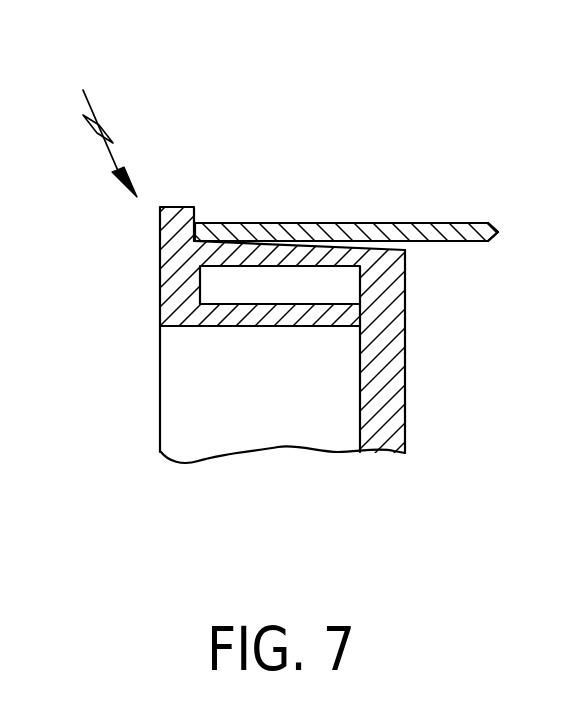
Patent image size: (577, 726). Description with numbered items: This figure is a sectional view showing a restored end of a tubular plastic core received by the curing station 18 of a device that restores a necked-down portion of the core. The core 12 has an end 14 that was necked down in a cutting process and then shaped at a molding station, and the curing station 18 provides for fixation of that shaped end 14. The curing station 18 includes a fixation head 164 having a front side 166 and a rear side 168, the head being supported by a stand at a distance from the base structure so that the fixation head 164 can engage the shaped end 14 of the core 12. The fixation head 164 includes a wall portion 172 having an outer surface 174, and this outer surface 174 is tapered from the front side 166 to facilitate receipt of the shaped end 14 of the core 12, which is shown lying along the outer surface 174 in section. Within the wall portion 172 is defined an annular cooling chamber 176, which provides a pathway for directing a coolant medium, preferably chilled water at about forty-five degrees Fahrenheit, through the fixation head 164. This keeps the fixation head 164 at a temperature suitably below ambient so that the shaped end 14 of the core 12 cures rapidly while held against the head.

The tubular plastic core 12 is at (498, 228).
The end of the core 14 is at (230, 222).
The curing station 18 is at (101, 127).
The fixation head 164 is at (177, 207).
The front side 166 is at (406, 290).
The rear side 168 is at (160, 283).
The wall portion 172 is at (291, 326).
The outer surface 174 is at (392, 249).
The annular cooling chamber 176 is at (302, 290).